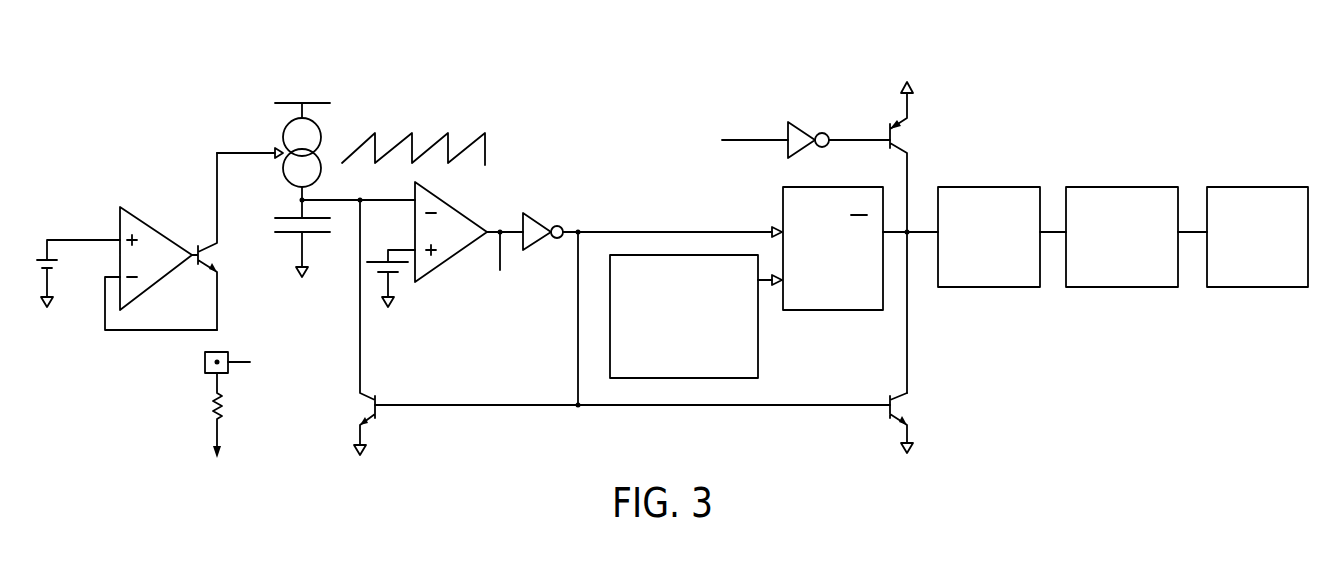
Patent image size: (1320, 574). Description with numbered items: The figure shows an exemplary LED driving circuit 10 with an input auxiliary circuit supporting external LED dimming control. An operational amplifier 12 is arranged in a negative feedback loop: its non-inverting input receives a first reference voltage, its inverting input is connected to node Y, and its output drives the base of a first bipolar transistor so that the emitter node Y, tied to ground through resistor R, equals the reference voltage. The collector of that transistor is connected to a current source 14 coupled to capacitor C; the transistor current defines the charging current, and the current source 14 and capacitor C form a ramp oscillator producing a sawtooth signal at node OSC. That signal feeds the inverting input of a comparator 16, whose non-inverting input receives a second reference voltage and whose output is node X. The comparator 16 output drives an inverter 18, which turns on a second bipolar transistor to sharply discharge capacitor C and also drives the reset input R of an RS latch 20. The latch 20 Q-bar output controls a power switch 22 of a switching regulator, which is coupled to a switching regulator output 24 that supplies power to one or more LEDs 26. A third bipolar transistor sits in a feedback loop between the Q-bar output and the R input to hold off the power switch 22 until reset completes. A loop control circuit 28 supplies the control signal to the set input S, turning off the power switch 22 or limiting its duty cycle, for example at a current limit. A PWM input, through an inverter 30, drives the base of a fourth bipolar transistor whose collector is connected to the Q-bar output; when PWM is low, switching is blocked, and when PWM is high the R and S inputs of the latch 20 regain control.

The LED driving circuit 10 is at (602, 80).
The operational amplifier 12 is at (140, 214).
The current source 14 is at (321, 131).
The comparator 16 is at (450, 203).
The inverter 18 is at (536, 213).
The RS latch 20 is at (855, 310).
The power switch 22 is at (988, 187).
The switching regulator output 24 is at (1122, 187).
The LEDs 26 is at (1258, 187).
The loop control circuit 28 is at (758, 362).
The inverter 30 is at (797, 125).